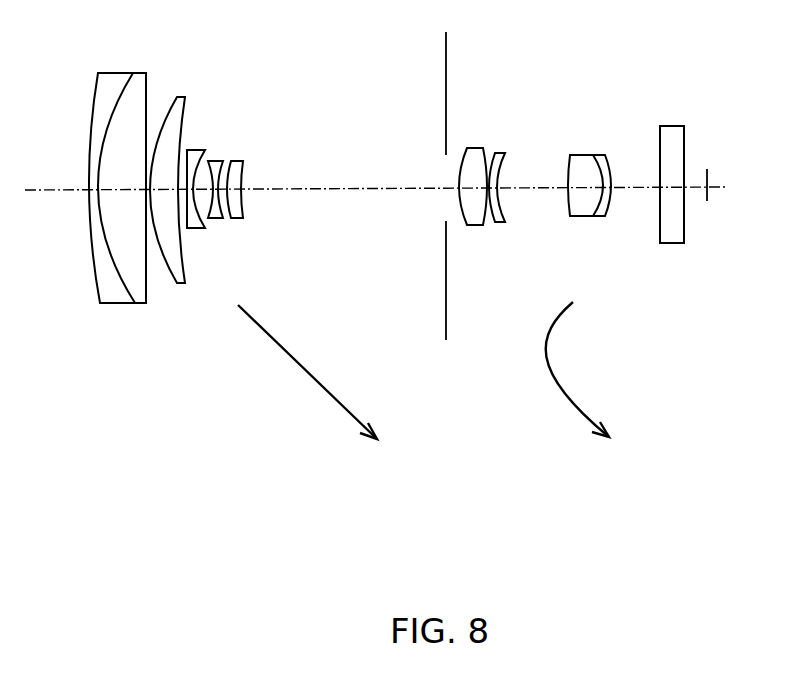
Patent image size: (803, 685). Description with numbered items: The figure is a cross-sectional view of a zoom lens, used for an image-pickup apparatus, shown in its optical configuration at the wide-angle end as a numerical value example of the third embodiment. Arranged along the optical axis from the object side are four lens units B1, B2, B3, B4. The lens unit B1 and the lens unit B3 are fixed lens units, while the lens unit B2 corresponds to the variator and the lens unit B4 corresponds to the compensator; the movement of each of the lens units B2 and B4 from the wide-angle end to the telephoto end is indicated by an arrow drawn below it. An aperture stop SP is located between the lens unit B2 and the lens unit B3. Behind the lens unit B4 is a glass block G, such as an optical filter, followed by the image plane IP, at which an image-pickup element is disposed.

The lens unit B1 is at (175, 62).
The lens unit B2 is at (242, 62).
The lens unit B3 is at (498, 61).
The lens unit B4 is at (602, 61).
The aperture stop SP is at (429, 179).
The glass block G is at (690, 61).
The image plane IP is at (726, 167).